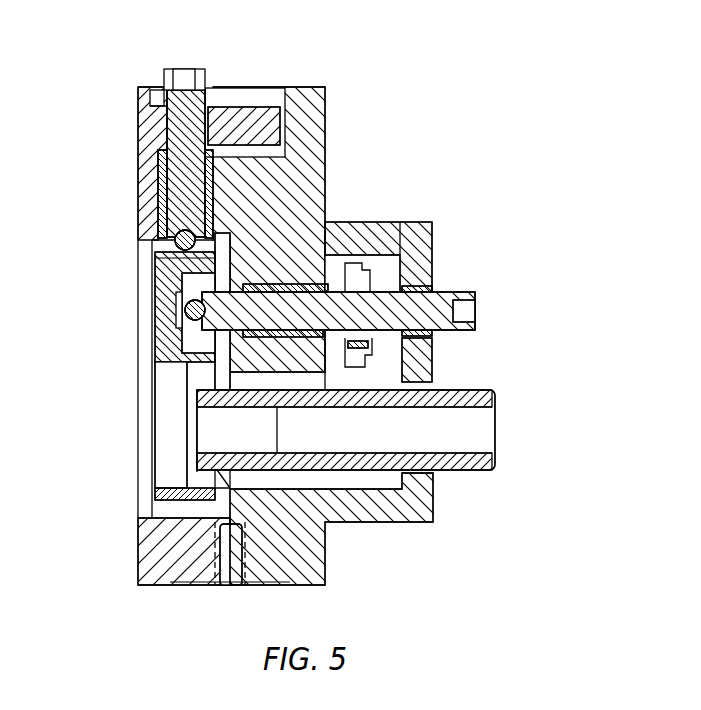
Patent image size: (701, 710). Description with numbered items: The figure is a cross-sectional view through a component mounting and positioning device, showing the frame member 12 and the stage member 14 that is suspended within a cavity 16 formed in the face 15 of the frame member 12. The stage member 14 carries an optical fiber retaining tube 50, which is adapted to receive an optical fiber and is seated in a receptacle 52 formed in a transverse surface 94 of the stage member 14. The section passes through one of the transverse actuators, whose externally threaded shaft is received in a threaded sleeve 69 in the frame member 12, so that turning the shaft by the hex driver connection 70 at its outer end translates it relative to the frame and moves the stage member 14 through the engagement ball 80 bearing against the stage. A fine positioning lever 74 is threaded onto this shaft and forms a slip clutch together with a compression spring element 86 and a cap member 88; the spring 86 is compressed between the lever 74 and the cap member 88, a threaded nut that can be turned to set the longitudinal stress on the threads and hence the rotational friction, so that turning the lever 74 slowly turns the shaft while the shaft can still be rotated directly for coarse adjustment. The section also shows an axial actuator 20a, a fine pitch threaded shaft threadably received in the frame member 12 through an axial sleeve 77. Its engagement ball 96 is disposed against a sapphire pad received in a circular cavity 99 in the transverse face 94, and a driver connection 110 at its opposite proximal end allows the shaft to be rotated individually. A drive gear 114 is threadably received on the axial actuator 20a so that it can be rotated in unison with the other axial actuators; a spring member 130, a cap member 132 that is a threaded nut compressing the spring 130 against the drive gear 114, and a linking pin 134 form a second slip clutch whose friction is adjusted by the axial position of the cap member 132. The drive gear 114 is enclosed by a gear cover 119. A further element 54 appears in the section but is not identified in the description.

The frame member 12 is at (142, 553).
The stage member 14 is at (140, 292).
The face 15 is at (137, 183).
The cavity 16 is at (142, 501).
The axial actuator 20a is at (438, 292).
The optical fiber retaining tube 50 is at (472, 397).
The receptacle 52 is at (142, 397).
The support plate 54 is at (140, 358).
The threaded sleeve 69 is at (297, 262).
The driver connection 70 is at (186, 77).
The fine positioning lever 74 is at (245, 108).
The axial sleeve 77 is at (283, 284).
The engagement ball 80 is at (137, 249).
The compression spring element 86 is at (152, 110).
The cap member 88 is at (150, 89).
The transverse surface 94 is at (217, 483).
The engagement ball 96 is at (138, 337).
The circular cavity 99 is at (138, 265).
The driver connection 110 is at (467, 316).
The drive gear 114 is at (373, 282).
The gear cover 119 is at (383, 514).
The spring member 130 is at (357, 270).
The cap member 132 is at (432, 237).
The linking pin 134 is at (375, 347).